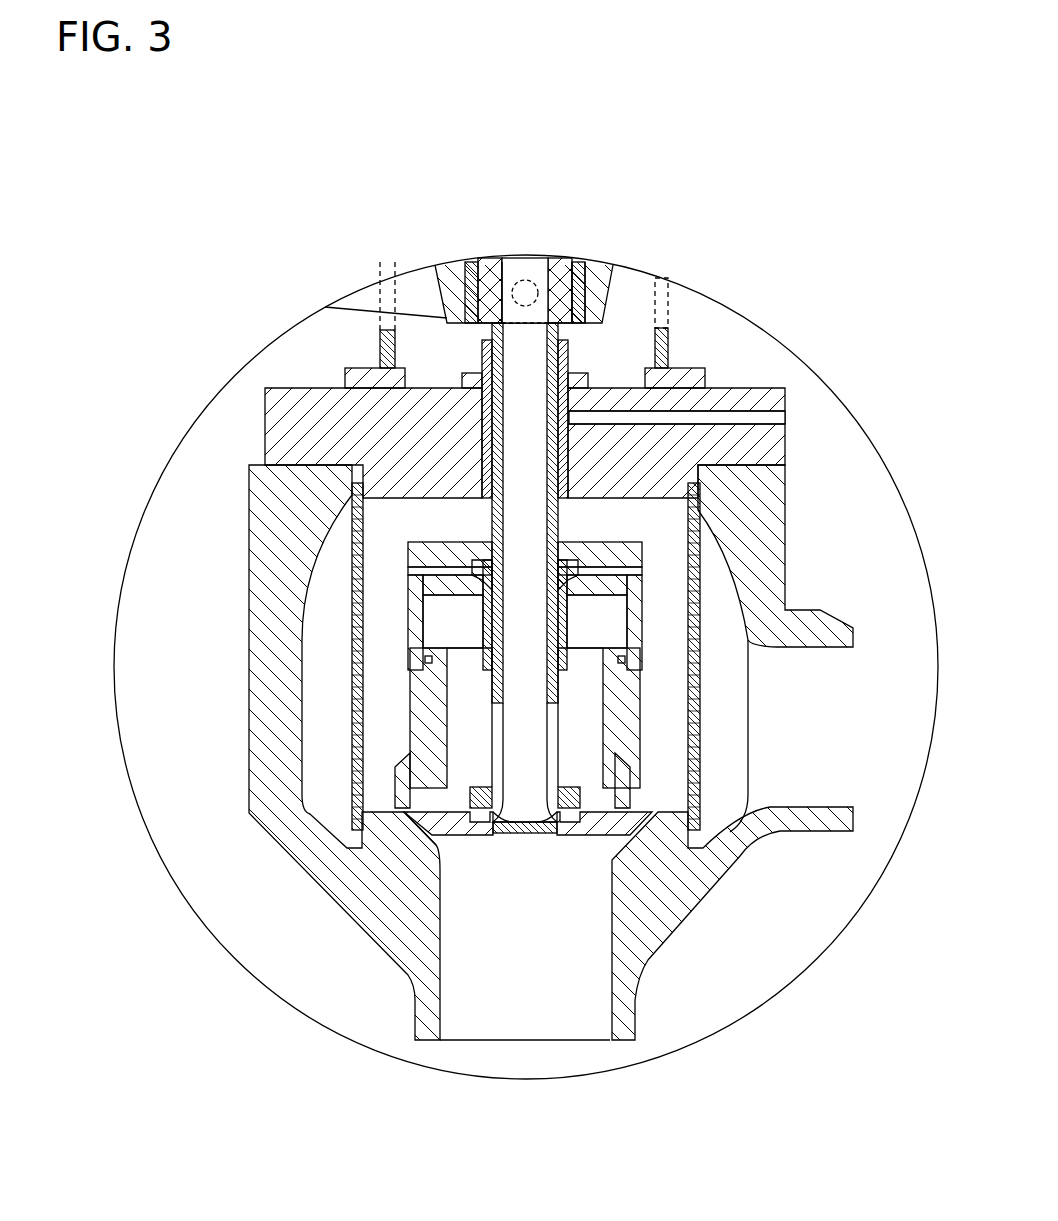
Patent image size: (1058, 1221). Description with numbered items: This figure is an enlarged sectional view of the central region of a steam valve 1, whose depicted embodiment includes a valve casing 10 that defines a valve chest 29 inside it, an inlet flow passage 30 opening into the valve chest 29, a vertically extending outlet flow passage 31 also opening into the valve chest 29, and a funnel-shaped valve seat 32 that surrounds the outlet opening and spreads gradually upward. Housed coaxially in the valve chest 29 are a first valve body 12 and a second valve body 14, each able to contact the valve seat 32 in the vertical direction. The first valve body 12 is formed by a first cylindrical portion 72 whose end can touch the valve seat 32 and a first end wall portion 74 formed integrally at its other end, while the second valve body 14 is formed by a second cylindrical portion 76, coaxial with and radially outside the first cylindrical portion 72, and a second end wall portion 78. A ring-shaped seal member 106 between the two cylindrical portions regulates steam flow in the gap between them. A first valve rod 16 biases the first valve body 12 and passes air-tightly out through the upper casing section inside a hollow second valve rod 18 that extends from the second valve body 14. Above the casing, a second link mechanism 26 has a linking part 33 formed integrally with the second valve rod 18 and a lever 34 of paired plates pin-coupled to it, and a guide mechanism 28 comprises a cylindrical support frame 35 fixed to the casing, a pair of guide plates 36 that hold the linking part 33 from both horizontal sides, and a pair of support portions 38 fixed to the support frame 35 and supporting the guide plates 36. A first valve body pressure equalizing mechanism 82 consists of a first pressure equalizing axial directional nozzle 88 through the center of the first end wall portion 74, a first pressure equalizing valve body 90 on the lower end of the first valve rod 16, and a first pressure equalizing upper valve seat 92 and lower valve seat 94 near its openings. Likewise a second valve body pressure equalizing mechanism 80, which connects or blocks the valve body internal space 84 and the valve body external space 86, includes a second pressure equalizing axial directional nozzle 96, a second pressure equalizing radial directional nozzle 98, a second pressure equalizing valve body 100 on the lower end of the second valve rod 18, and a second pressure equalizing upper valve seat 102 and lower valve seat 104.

The steam valve 1 is at (783, 208).
The valve casing 10 is at (787, 385).
The first valve body 12 is at (616, 832).
The second valve body 14 is at (700, 778).
The first valve rod 16 is at (522, 268).
The second valve rod 18 is at (560, 520).
The second link mechanism 26 is at (326, 311).
The guide mechanism 28 is at (468, 247).
The valve chest 29 is at (676, 673).
The inlet flow passage 30 is at (820, 729).
The outlet flow passage 31 is at (574, 946).
The valve seat 32 is at (465, 872).
The linking part 33 is at (556, 258).
The lever 34 is at (366, 311).
The support frame 35 is at (669, 330).
The guide plates 36 is at (583, 258).
The support portions 38 is at (600, 258).
The first cylindrical portion 72 is at (430, 731).
The first end wall portion 74 is at (410, 795).
The second cylindrical portion 76 is at (686, 699).
The second end wall portion 78 is at (592, 586).
The second valve body pressure equalizing mechanism 80 is at (450, 538).
The first valve body pressure equalizing mechanism 82 is at (472, 752).
The valve body internal space 84 is at (599, 718).
The valve body external space 86 is at (674, 588).
The first pressure equalizing axial directional nozzle 88 is at (470, 832).
The first pressure equalizing valve body 90 is at (525, 836).
The first pressure equalizing upper valve seat 92 is at (545, 806).
The first pressure equalizing lower valve seat 94 is at (548, 838).
The second pressure equalizing axial directional nozzle 96 is at (457, 615).
The second pressure equalizing radial directional nozzle 98 is at (408, 578).
The second pressure equalizing valve body 100 is at (480, 563).
The second pressure equalizing upper valve seat 102 is at (578, 570).
The second pressure equalizing lower valve seat 104 is at (566, 600).
The seal member 106 is at (424, 660).